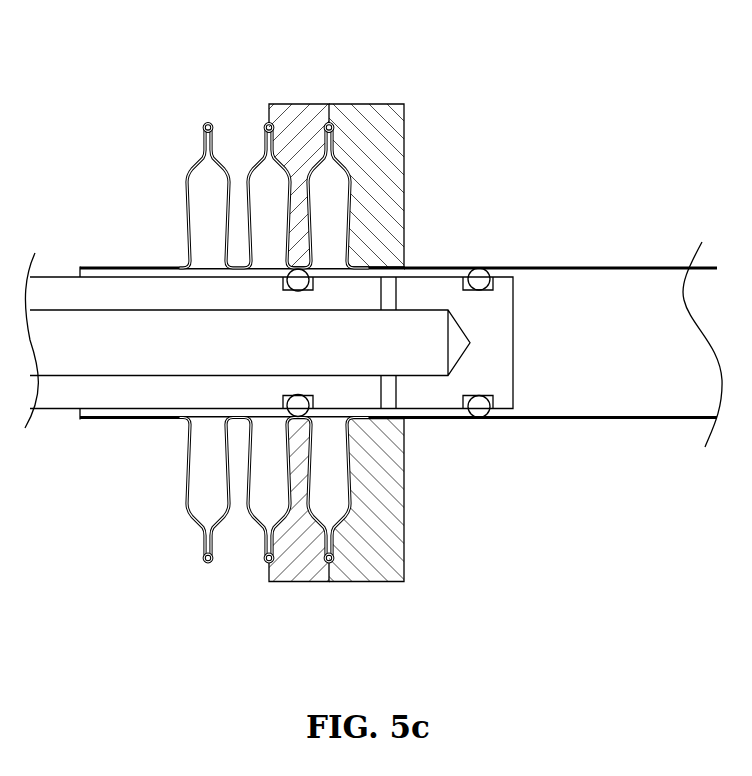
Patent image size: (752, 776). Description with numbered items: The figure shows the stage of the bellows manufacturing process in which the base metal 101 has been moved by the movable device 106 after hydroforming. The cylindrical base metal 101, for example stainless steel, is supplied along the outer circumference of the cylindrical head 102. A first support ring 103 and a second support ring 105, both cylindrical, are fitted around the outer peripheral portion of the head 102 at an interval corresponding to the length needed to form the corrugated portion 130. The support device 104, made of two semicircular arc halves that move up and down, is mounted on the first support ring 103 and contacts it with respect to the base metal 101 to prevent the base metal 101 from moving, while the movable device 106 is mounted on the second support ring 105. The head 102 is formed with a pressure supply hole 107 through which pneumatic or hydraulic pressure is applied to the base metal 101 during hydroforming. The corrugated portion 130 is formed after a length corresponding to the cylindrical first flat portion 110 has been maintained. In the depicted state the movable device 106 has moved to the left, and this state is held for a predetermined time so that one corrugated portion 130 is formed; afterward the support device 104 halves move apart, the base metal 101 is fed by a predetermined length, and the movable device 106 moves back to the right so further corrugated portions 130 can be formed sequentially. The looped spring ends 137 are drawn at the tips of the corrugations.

The base metal 101 is at (547, 267).
The head 102 is at (495, 341).
The first support ring 103 is at (298, 278).
The support device 104 is at (300, 122).
The second support ring 105 is at (479, 270).
The movable device 106 is at (367, 122).
The pressure supply hole 107 is at (392, 293).
The first flat portion 110 is at (117, 270).
The corrugated portion 130 is at (174, 132).
The spring loop end 137 is at (208, 122).